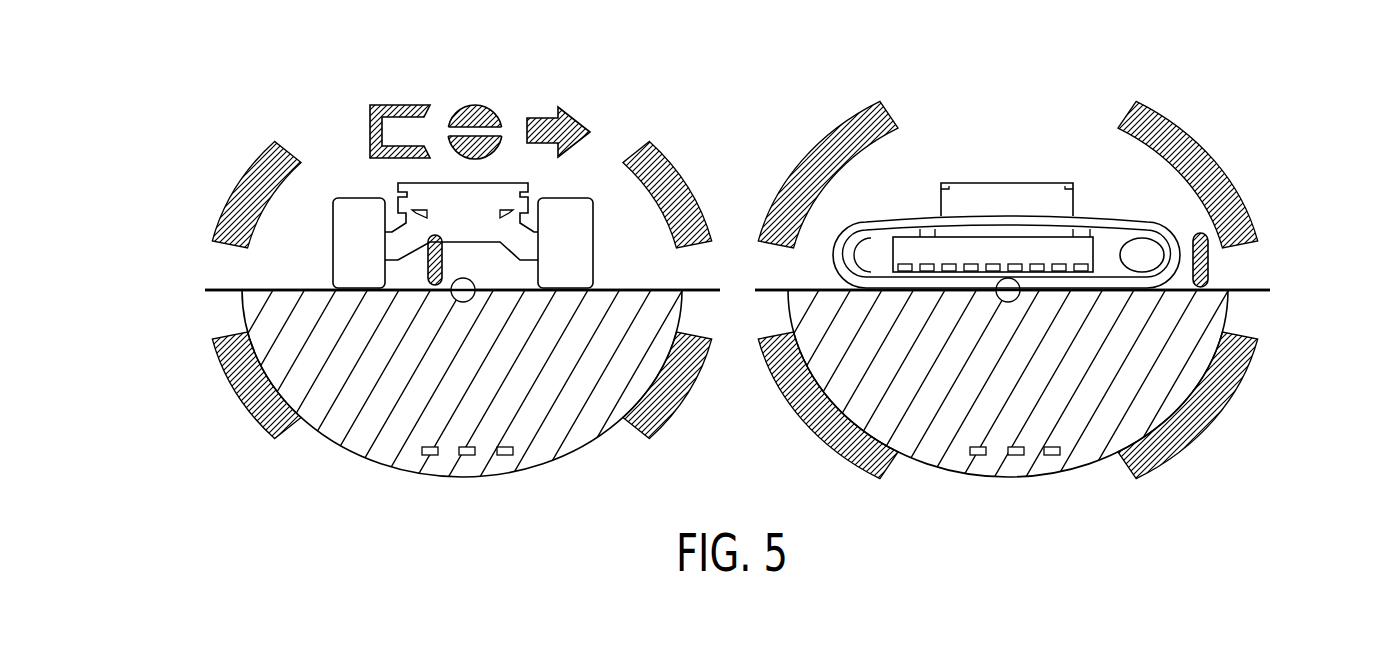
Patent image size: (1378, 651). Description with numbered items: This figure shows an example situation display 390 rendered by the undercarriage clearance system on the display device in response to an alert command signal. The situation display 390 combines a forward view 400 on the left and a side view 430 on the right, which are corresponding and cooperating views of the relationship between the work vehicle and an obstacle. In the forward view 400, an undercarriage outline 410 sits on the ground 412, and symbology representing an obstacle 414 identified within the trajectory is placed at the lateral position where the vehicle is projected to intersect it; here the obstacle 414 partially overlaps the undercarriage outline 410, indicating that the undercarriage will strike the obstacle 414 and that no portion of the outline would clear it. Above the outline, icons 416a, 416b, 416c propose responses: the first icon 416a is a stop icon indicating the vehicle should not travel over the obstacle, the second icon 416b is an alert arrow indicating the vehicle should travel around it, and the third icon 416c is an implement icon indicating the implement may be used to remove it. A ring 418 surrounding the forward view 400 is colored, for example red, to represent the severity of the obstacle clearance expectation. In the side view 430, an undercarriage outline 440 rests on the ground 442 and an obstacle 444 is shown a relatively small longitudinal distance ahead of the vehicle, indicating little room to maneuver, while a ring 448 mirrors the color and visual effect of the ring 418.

The situation display 390 is at (173, 121).
The forward view 400 is at (212, 175).
The undercarriage outline 410 is at (530, 185).
The ground 412 is at (407, 412).
The obstacle 414 is at (430, 278).
The first icon 416a is at (458, 105).
The second icon 416b is at (572, 123).
The third icon 416c is at (400, 105).
The ring 418 is at (257, 153).
The side view 430 is at (1250, 158).
The undercarriage outline 440 is at (1023, 247).
The ground 442 is at (1073, 415).
The obstacle 444 is at (1212, 268).
The ring 448 is at (1222, 403).